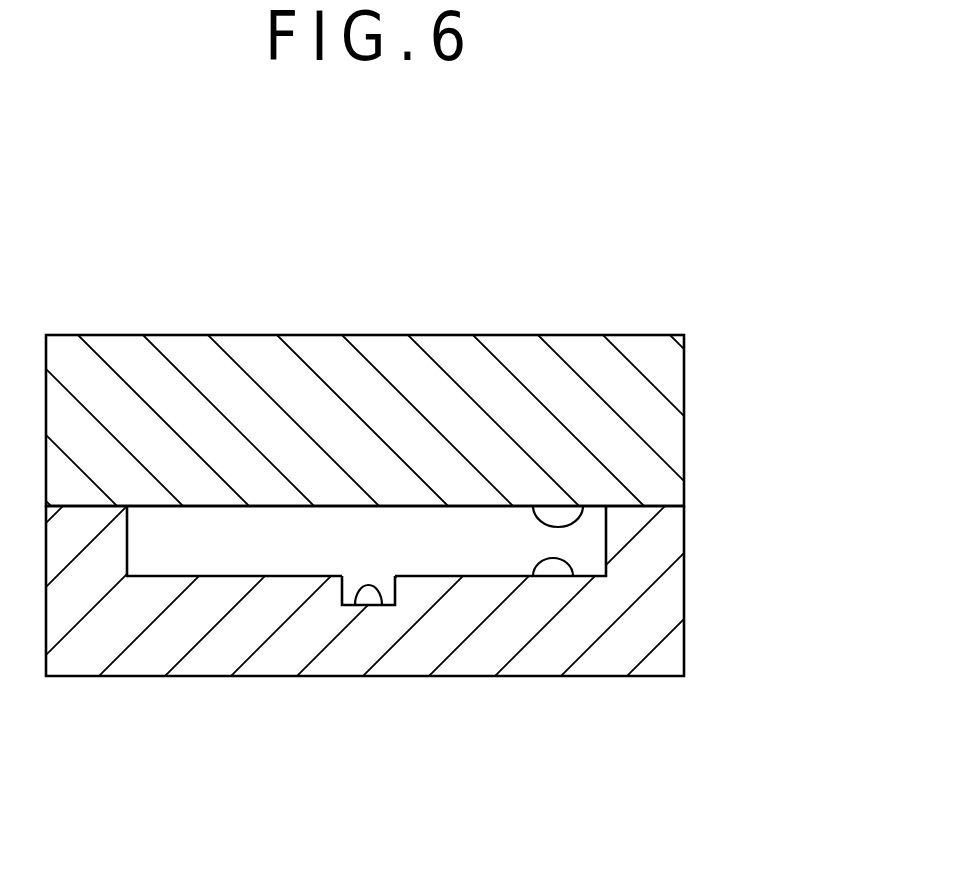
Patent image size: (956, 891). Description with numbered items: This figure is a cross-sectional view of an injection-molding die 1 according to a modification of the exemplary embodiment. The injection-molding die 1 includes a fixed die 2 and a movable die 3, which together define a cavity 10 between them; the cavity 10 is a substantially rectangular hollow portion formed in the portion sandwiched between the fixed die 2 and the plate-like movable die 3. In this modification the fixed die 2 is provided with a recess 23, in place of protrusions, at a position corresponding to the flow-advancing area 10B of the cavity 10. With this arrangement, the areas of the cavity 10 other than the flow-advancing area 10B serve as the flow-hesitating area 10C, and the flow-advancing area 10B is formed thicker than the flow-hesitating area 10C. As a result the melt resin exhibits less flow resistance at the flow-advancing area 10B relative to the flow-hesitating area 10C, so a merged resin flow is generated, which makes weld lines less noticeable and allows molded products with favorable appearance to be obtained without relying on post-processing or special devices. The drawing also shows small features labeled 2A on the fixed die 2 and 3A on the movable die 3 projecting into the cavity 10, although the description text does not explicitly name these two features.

The injection-molding die 1 is at (456, 180).
The fixed die 2 is at (652, 618).
The projection of lower mold 2A is at (573, 575).
The movable die 3 is at (686, 363).
The projection of upper mold 3A is at (583, 505).
The cavity 10 is at (465, 633).
The flow-advancing area 10B is at (370, 540).
The flow-hesitating area 10C is at (295, 542).
The recess 23 is at (383, 606).